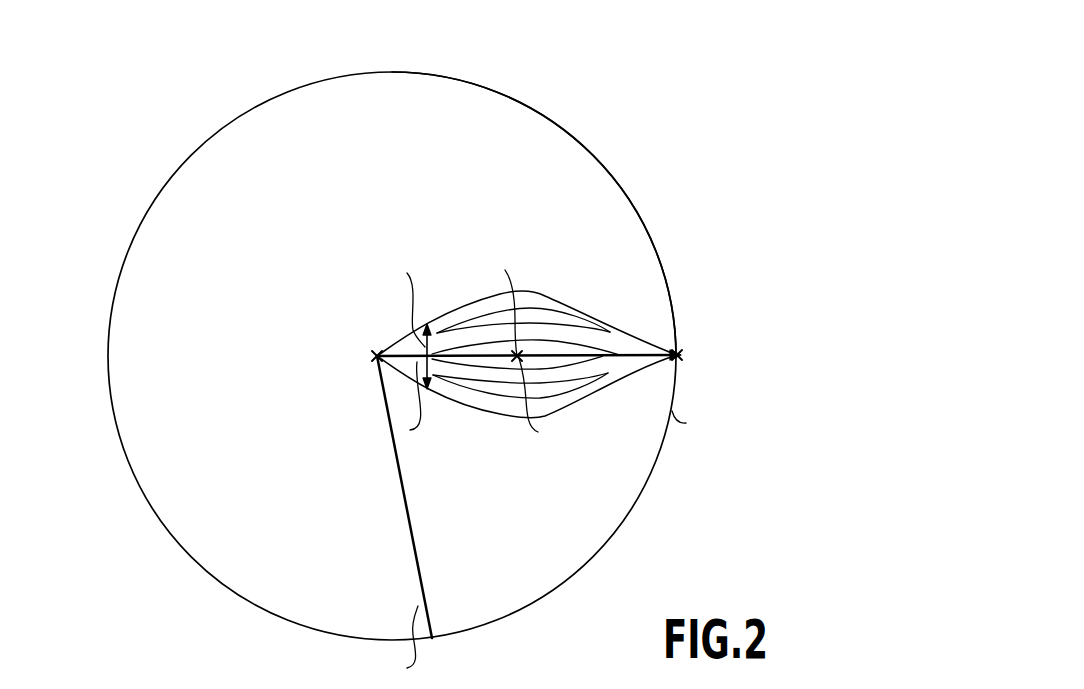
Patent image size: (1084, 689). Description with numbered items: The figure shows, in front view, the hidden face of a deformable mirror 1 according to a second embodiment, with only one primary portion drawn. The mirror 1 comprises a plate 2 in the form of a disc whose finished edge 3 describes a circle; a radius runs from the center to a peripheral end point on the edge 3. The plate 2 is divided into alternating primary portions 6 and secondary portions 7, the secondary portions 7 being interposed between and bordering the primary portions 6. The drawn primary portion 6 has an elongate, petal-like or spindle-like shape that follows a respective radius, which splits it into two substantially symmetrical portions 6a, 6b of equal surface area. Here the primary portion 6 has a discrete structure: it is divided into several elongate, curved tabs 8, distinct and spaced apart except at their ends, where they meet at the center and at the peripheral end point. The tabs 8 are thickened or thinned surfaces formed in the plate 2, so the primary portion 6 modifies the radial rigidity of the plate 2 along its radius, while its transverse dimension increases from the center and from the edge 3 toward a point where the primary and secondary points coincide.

The deformable mirror 1 is at (720, 93).
The plate 2 is at (188, 188).
The edge 3 is at (545, 114).
The primary portion 6 is at (543, 391).
The portion 6a is at (553, 320).
The portion 6b is at (557, 377).
The secondary portion 7 is at (622, 281).
The tab 8 is at (515, 375).